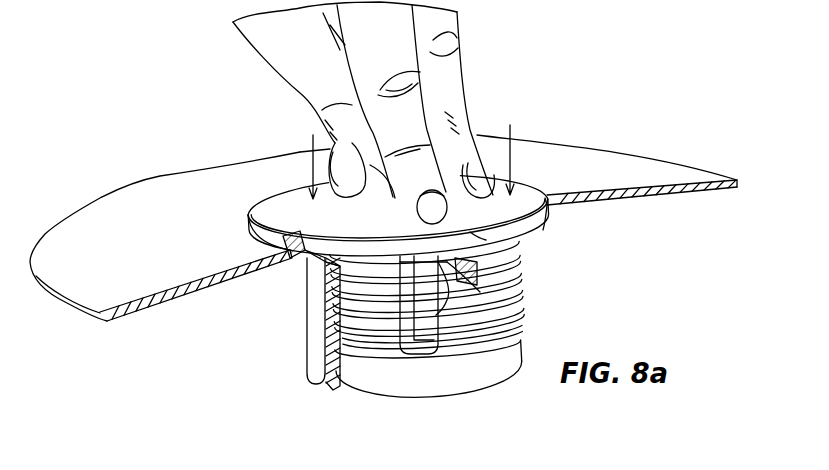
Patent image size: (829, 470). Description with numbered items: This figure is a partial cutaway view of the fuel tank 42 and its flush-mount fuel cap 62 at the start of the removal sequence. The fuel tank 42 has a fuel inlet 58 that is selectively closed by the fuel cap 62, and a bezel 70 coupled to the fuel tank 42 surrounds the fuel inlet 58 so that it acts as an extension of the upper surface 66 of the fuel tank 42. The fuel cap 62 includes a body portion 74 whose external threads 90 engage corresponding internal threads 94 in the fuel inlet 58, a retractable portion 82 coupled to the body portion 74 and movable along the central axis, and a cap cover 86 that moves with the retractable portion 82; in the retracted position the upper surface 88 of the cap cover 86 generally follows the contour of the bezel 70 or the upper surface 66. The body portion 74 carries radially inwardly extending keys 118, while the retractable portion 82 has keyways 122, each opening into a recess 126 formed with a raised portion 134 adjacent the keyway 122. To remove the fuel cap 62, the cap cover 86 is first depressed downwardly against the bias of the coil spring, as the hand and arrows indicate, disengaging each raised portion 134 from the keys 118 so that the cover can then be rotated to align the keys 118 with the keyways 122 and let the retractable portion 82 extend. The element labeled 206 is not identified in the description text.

The fuel tank 42 is at (703, 190).
The fuel inlet 58 is at (306, 329).
The fuel cap 62 is at (568, 257).
The upper surface 66 is at (186, 234).
The bezel 70 is at (264, 216).
The body portion 74 is at (528, 341).
The retractable portion 82 is at (528, 307).
The cap cover 86 is at (546, 228).
The upper surface 88 is at (389, 224).
The external threads 90 is at (377, 330).
The internal threads 94 is at (318, 385).
The keys 118 is at (481, 220).
The keyways 122 is at (428, 331).
The recess 126 is at (403, 250).
The raised portion 134 is at (306, 290).
The bottom edge 206 is at (410, 396).